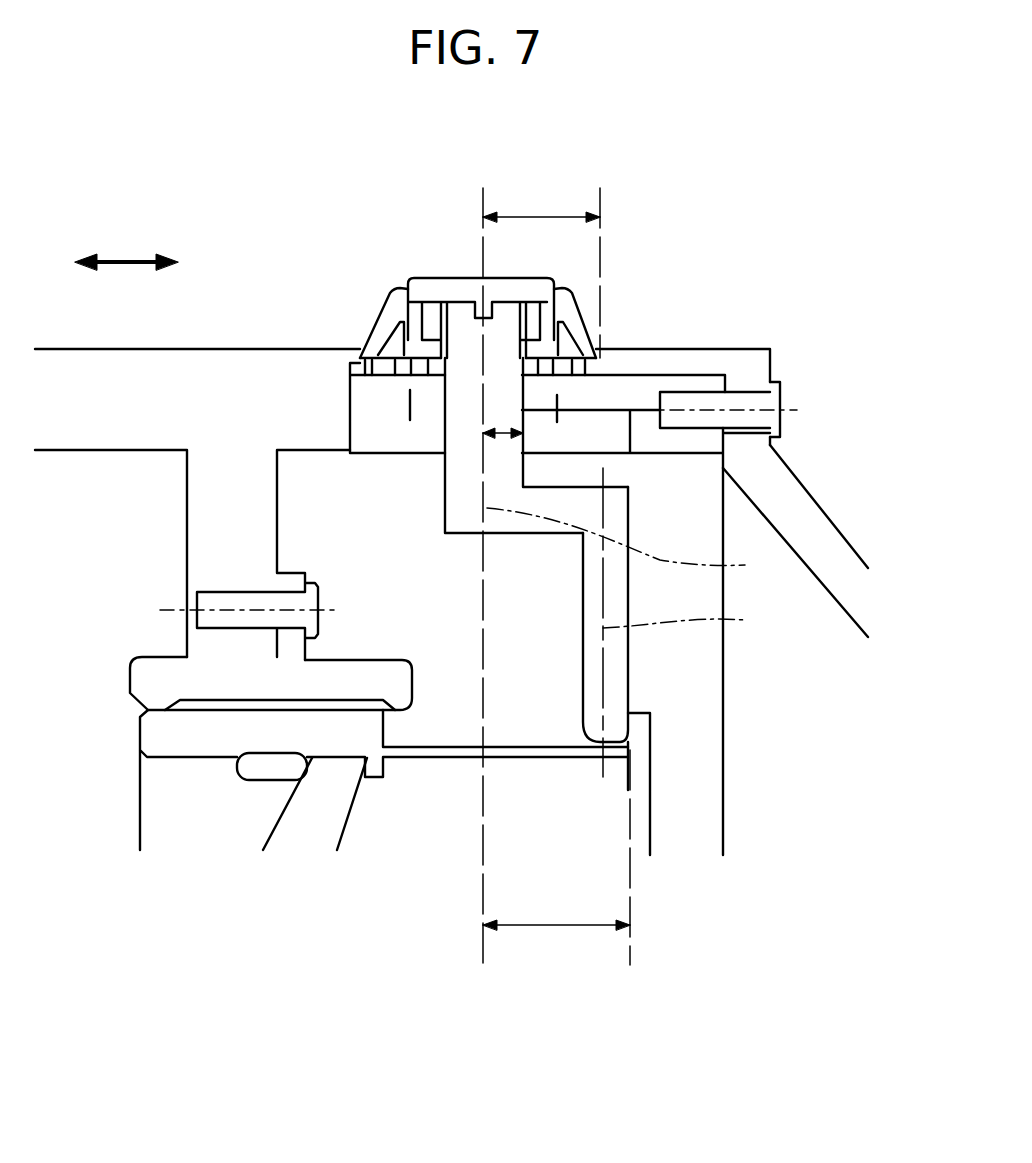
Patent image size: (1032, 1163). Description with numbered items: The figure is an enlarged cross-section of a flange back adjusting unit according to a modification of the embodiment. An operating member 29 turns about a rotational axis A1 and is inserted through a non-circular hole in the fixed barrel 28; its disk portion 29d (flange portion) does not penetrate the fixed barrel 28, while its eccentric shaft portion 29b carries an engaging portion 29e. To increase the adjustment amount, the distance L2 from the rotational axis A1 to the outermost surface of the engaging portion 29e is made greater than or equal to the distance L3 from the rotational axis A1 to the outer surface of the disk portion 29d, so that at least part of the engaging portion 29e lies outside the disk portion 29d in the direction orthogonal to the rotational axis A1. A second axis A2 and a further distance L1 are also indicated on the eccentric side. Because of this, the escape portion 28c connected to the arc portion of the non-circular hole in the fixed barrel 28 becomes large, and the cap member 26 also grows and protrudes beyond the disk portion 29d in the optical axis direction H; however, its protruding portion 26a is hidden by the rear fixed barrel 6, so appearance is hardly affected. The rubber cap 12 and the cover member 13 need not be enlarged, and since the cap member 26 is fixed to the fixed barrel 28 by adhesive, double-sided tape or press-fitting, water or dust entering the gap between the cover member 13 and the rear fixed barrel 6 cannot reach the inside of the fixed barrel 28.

The rear fixed barrel 6 is at (752, 363).
The rubber cap 12 is at (435, 290).
The cover member 13 is at (392, 307).
The cap member 26 is at (605, 392).
The protruding portion 26a is at (630, 392).
The fixed barrel 28 is at (387, 403).
The escape portion 28c is at (587, 435).
The operating member 29 is at (467, 310).
The eccentric shaft portion 29b is at (632, 667).
The disk portion 29d is at (372, 358).
The engaging portion 29e is at (618, 727).
The rotational axis A1 is at (637, 546).
The second axis A2 is at (695, 622).
The optical axis direction H is at (126, 239).
The distance L1 is at (503, 418).
The distance L2 is at (556, 859).
The distance L3 is at (541, 575).